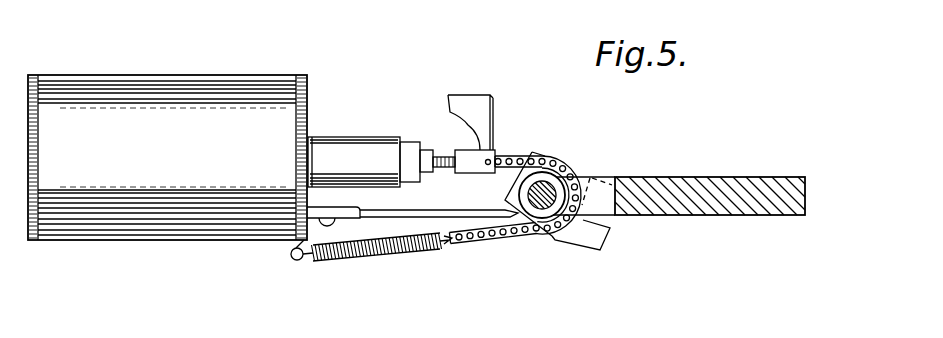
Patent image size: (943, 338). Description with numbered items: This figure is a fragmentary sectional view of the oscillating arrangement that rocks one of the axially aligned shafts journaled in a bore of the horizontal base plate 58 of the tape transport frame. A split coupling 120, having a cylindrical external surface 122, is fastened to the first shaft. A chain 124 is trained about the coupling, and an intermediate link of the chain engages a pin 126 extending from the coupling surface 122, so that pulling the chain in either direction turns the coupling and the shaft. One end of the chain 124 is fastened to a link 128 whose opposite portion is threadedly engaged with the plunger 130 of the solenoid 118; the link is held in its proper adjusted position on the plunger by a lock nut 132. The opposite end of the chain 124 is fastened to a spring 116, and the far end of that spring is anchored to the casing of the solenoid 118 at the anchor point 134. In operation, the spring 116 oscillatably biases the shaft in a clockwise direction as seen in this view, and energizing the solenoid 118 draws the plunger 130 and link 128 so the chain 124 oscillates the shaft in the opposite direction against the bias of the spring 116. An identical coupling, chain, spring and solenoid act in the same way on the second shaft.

The horizontal base plate 58 is at (720, 177).
The spring 116 is at (401, 257).
The solenoid 118 is at (178, 150).
The split coupling 120 is at (538, 152).
The cylindrical external surface 122 is at (516, 222).
The chain 124 is at (561, 168).
The pin 126 is at (557, 240).
The link 128 is at (495, 152).
The solenoid plunger 130 is at (365, 138).
The lock nut 132 is at (428, 150).
The spring anchor on solenoid casing 134 is at (294, 260).